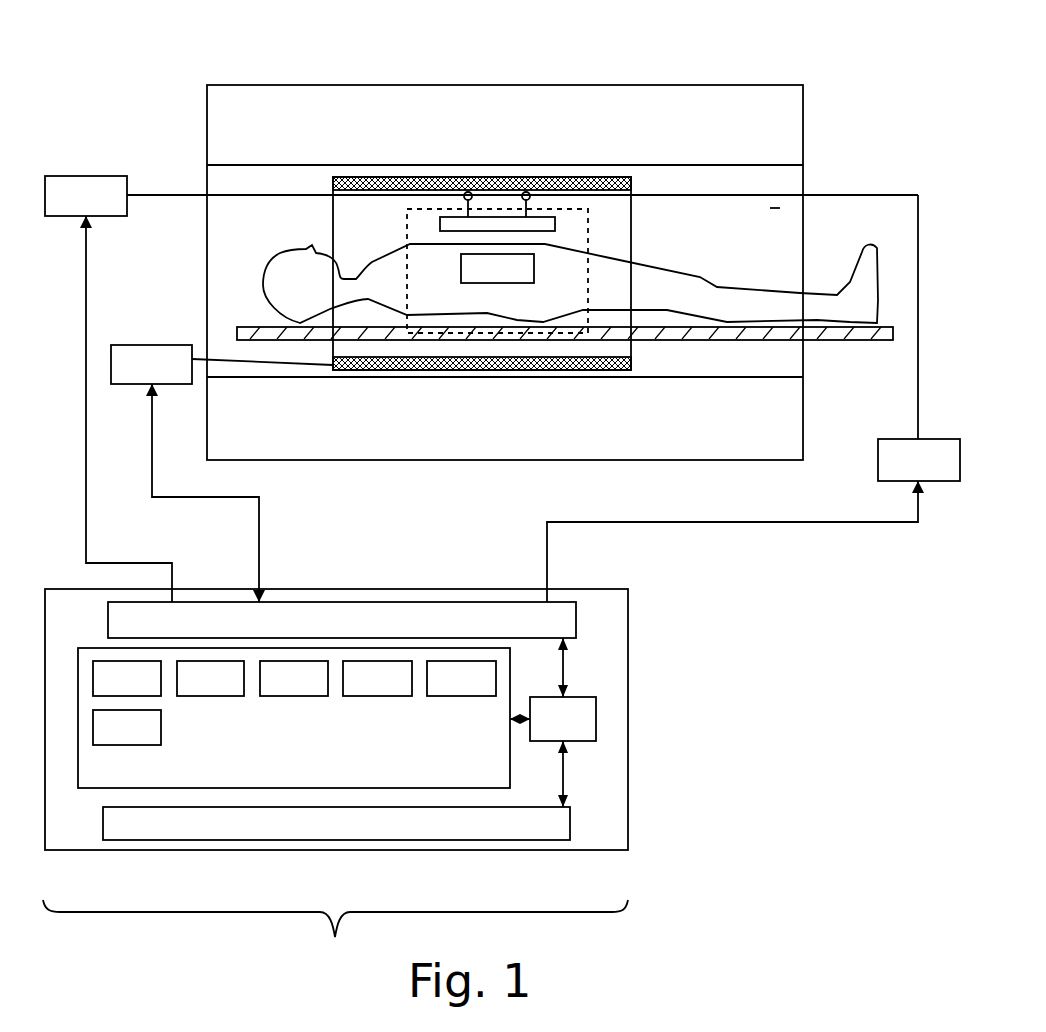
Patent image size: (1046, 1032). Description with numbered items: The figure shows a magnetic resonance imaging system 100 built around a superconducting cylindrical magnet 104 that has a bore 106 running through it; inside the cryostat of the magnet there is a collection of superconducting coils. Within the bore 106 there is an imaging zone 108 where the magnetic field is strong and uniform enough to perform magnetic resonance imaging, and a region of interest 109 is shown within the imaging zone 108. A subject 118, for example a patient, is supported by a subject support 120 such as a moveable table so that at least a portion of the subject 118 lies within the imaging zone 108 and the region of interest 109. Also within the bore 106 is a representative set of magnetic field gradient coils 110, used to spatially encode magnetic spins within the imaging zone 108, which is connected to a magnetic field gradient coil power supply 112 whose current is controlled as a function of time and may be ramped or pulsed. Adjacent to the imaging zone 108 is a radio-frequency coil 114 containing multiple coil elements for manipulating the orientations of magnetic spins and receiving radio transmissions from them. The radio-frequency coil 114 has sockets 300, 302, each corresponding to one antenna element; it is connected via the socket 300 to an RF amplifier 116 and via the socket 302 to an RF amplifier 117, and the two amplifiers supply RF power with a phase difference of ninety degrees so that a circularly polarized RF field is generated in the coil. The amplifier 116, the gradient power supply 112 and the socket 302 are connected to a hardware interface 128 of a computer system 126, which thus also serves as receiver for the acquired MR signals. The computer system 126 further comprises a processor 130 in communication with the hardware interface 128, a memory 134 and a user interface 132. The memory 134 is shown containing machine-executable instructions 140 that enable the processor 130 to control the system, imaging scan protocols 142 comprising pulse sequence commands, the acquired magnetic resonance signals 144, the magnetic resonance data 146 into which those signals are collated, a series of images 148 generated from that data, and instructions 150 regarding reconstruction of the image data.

The magnetic resonance imaging system 100 is at (335, 934).
The magnet 104 is at (805, 123).
The bore 106 is at (770, 208).
The imaging zone 108 is at (407, 232).
The region of interest 109 is at (535, 268).
The magnetic field gradient coils 110 is at (367, 188).
The magnetic field gradient coil power supply 112 is at (174, 377).
The radio-frequency coil 114 is at (557, 220).
The RF amplifier 116 is at (108, 208).
The RF amplifier 117 is at (941, 474).
The subject 118 is at (264, 272).
The subject support 120 is at (872, 340).
The computer system 126 is at (335, 589).
The hardware interface 128 is at (364, 634).
The processor 130 is at (586, 736).
The user interface 132 is at (354, 839).
The memory 134 is at (88, 788).
The machine-executable instructions 140 is at (149, 694).
The imaging scan protocols 142 is at (232, 694).
The magnetic resonance signals 144 is at (316, 694).
The magnetic resonance data 146 is at (399, 694).
The series of images 148 is at (483, 694).
The instructions regarding reconstruction 150 is at (149, 743).
The socket 300 is at (468, 192).
The socket 302 is at (526, 192).